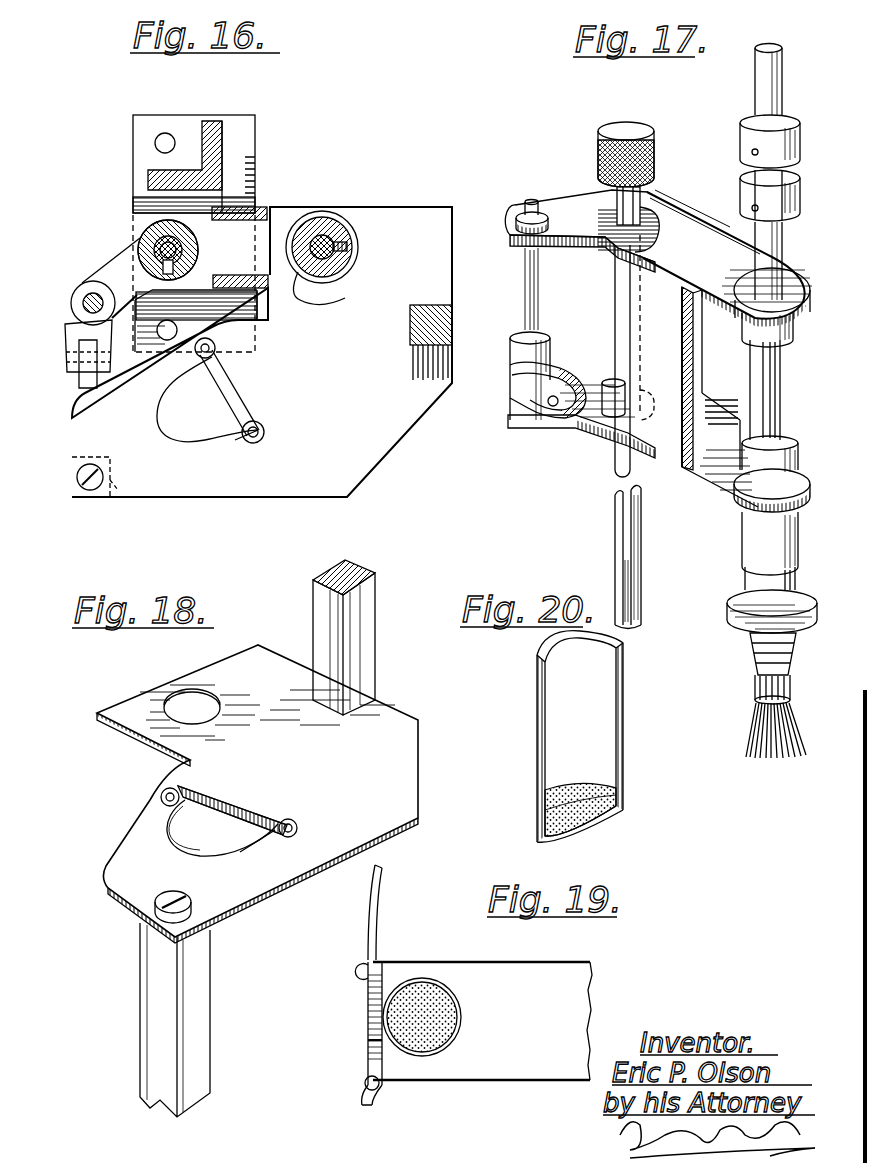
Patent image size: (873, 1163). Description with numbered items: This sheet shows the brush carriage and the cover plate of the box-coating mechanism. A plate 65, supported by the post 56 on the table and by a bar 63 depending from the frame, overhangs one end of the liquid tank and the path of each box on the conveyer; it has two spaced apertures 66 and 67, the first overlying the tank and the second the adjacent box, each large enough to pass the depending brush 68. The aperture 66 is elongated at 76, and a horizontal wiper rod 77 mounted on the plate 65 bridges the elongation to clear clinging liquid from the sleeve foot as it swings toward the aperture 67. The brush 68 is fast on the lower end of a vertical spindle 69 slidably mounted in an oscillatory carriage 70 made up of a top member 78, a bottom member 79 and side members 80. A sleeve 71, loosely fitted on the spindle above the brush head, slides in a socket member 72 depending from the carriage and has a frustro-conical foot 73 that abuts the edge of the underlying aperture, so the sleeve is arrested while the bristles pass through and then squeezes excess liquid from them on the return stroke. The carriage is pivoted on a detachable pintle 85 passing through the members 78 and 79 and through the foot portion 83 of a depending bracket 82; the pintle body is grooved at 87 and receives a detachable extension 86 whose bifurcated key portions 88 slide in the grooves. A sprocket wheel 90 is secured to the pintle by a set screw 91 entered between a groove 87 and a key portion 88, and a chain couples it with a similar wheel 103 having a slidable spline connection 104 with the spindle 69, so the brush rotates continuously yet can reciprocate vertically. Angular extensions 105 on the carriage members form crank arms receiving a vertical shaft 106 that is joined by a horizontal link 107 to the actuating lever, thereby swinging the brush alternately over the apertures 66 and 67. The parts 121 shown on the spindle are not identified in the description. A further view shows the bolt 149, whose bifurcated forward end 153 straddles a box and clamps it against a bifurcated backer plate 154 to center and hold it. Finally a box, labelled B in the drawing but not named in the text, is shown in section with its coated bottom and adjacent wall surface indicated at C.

In FIG. 16, the post 56 is at (116, 498).
In FIG. 18, the post 56 is at (145, 1005).
In FIG. 16, the bar 63 is at (440, 306).
In FIG. 18, the bar 63 is at (365, 600).
In FIG. 16, the plate 65 is at (415, 222).
In FIG. 18, the plate 65 is at (140, 822).
In FIG. 16, the aperture 66 is at (207, 399).
In FIG. 18, the aperture 66 is at (222, 828).
In FIG. 18, the aperture 67 is at (175, 697).
In FIG. 17, the brush 68 is at (772, 758).
In FIG. 16, the spindle 69 is at (325, 240).
In FIG. 17, the spindle 69 is at (746, 101).
In FIG. 16, the oscillatory carriage 70 is at (329, 299).
In FIG. 17, the oscillatory carriage 70 is at (692, 205).
In FIG. 17, the sleeve 71 is at (745, 580).
In FIG. 17, the socket member 72 is at (742, 550).
In FIG. 17, the frustro-conical foot 73 is at (737, 640).
In FIG. 16, the elongation 76 is at (214, 432).
In FIG. 18, the elongation 76 is at (258, 836).
In FIG. 16, the wiper rod 77 is at (232, 390).
In FIG. 18, the wiper rod 77 is at (237, 805).
In FIG. 17, the top member 78 is at (727, 259).
In FIG. 17, the bottom member 79 is at (720, 397).
In FIG. 16, the side members 80 is at (240, 212).
In FIG. 17, the side members 80 is at (614, 312).
In FIG. 16, the bracket 82 is at (222, 133).
In FIG. 16, the angular foot portion 83 is at (243, 153).
In FIG. 16, the pintle 85 is at (160, 236).
In FIG. 17, the pintle 85 is at (616, 138).
In FIG. 17, the extension 86 is at (642, 605).
In FIG. 17, the grooves 87 is at (614, 509).
In FIG. 16, the key portions 88 is at (166, 238).
In FIG. 17, the key portions 88 is at (620, 553).
In FIG. 16, the sprocket wheel 90 is at (190, 248).
In FIG. 16, the set screw 91 is at (176, 264).
In FIG. 16, the sprocket wheel 103 is at (350, 228).
In FIG. 16, the spline connection 104 is at (350, 245).
In FIG. 17, the spline connection 104 is at (780, 408).
In FIG. 16, the angular extensions 105 is at (118, 266).
In FIG. 17, the angular extensions 105 is at (572, 195).
In FIG. 16, the vertical shaft 106 is at (87, 296).
In FIG. 17, the vertical shaft 106 is at (528, 200).
In FIG. 16, the horizontal link 107 is at (97, 390).
In FIG. 17, the horizontal link 107 is at (562, 425).
In FIG. 17, the collar 121 is at (745, 178).
In FIG. 19, the bolt 149 is at (592, 978).
In FIG. 19, the bifurcated forward end 153 is at (372, 1083).
In FIG. 19, the bifurcated plate 154 is at (370, 1055).
In FIG. 20, the cup B is at (537, 682).
In FIG. 19, the cup B is at (422, 1060).
In FIG. 20, the coated box section C is at (622, 800).
In FIG. 19, the coated box section C is at (437, 995).